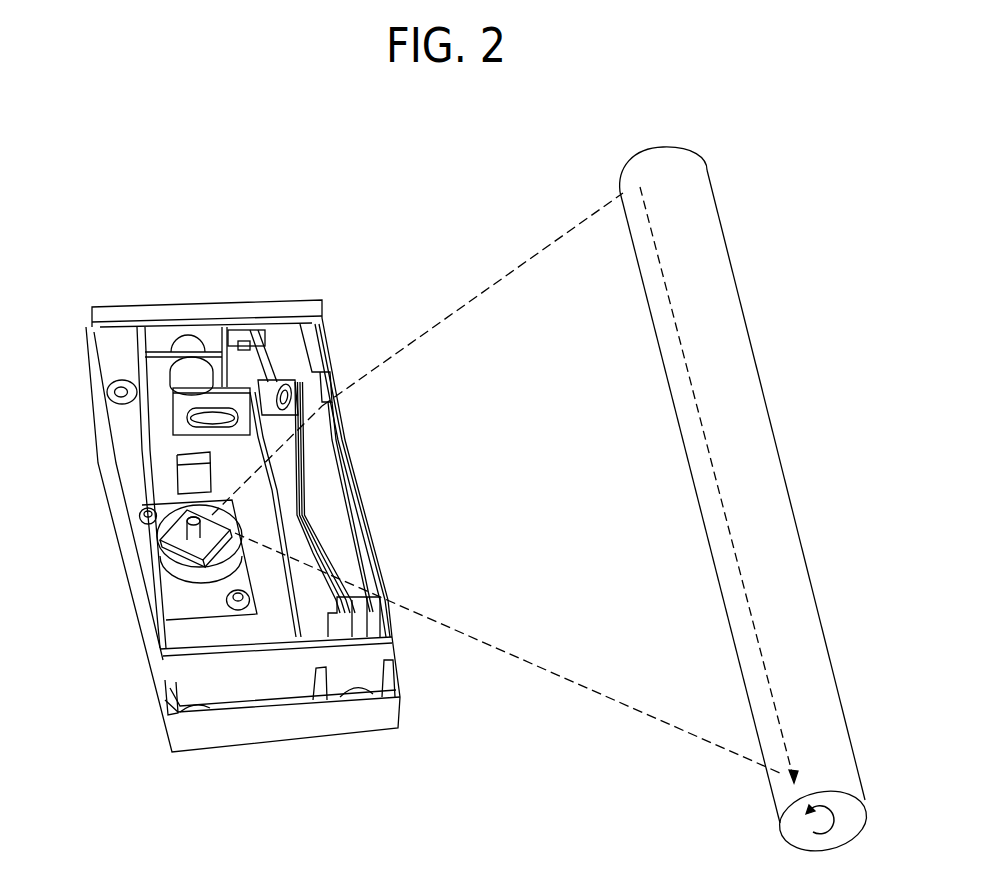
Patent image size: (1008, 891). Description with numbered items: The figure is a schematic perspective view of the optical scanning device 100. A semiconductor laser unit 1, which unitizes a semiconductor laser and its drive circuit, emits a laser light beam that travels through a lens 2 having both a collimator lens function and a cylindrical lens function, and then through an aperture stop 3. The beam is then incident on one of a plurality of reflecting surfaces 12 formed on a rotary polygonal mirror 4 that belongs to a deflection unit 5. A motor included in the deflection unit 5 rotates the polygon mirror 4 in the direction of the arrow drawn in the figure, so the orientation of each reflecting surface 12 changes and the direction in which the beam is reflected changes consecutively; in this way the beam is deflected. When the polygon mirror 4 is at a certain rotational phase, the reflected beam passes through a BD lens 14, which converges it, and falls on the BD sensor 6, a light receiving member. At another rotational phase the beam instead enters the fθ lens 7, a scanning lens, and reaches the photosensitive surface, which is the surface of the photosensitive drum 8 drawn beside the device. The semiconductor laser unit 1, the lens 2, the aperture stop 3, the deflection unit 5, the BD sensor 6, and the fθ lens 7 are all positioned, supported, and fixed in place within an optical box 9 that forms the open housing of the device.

The optical scanning device 100 is at (233, 233).
The semiconductor laser unit 1 is at (137, 306).
The lens 2 is at (188, 397).
The aperture stop 3 is at (177, 462).
The rotary polygonal mirror 4 is at (160, 530).
The deflection unit 5 is at (170, 603).
The BD sensor 6 is at (263, 322).
The fθ lens 7 is at (350, 536).
The photosensitive drum 8 is at (666, 157).
The optical box 9 is at (160, 666).
The reflecting surface 12 is at (180, 553).
The BD lens 14 is at (292, 430).